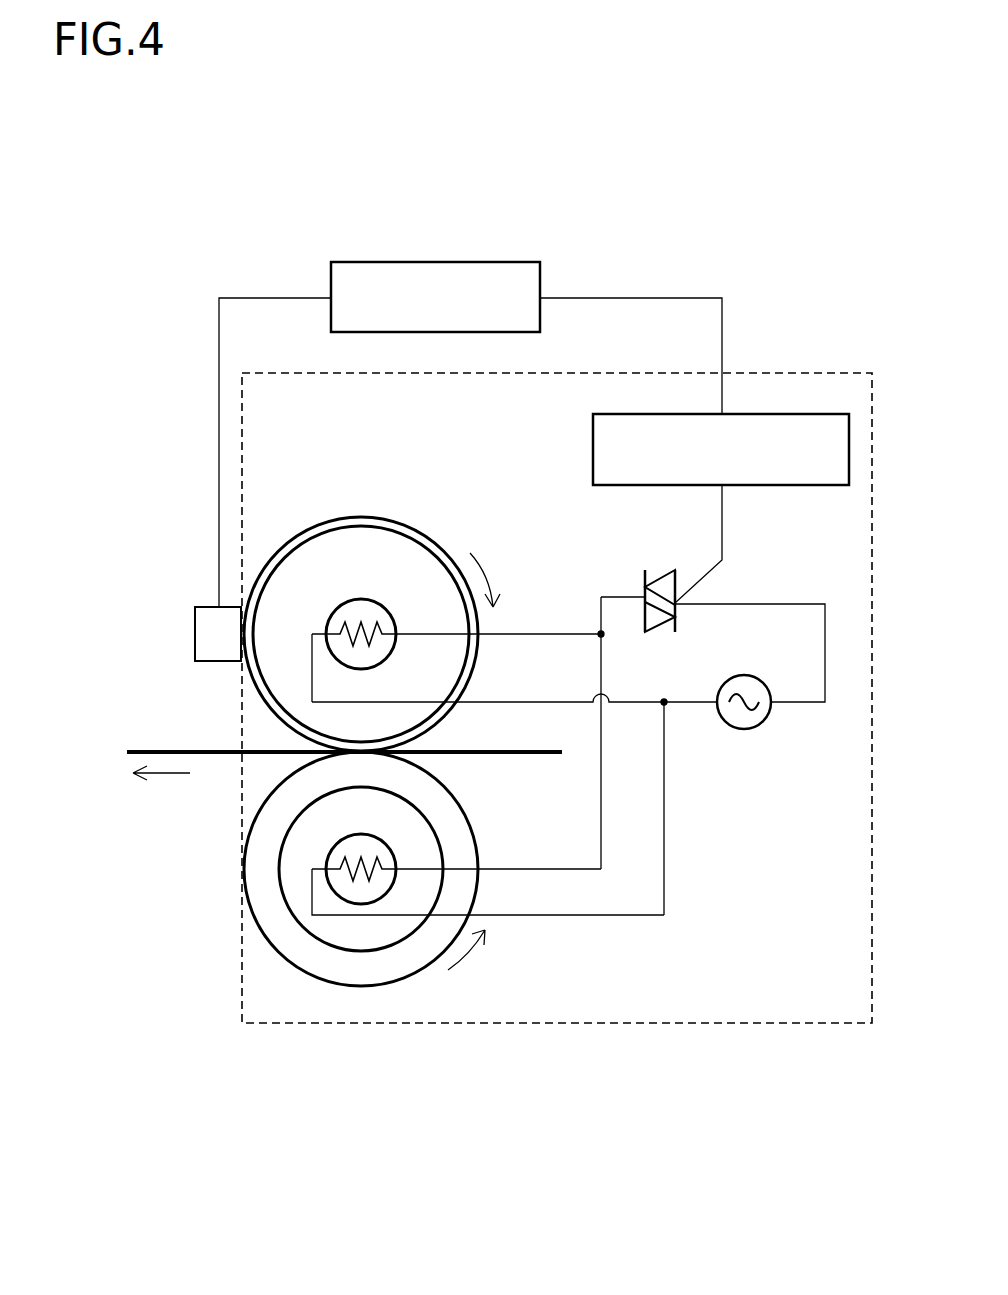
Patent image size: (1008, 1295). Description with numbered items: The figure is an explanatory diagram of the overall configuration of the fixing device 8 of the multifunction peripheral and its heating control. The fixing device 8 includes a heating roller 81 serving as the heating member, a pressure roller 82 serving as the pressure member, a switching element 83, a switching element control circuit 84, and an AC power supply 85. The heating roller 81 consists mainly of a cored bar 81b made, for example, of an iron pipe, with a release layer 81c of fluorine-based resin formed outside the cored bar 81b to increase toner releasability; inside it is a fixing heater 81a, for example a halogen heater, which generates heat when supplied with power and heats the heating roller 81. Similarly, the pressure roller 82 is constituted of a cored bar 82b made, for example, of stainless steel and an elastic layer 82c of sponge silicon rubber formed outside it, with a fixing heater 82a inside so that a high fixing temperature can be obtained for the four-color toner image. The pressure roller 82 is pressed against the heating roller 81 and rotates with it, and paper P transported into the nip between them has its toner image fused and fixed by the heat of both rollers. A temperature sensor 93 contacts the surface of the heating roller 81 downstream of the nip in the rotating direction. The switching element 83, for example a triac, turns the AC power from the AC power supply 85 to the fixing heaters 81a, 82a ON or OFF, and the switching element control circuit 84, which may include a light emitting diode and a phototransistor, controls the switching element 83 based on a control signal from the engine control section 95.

The fixing device 8 is at (706, 1023).
The heating roller 81 is at (422, 597).
The fixing heater 81a is at (382, 607).
The cored bar 81b is at (312, 543).
The release layer 81c is at (307, 530).
The pressure roller 82 is at (454, 883).
The fixing heater 82a is at (386, 842).
The cored bar 82b is at (283, 845).
The elastic layer 82c is at (362, 981).
The switching element 83 is at (630, 585).
The switching element control circuit 84 is at (773, 485).
The AC power supply 85 is at (763, 722).
The temperature sensor 93 is at (195, 632).
The engine control section 95 is at (498, 262).
The paper P is at (170, 750).